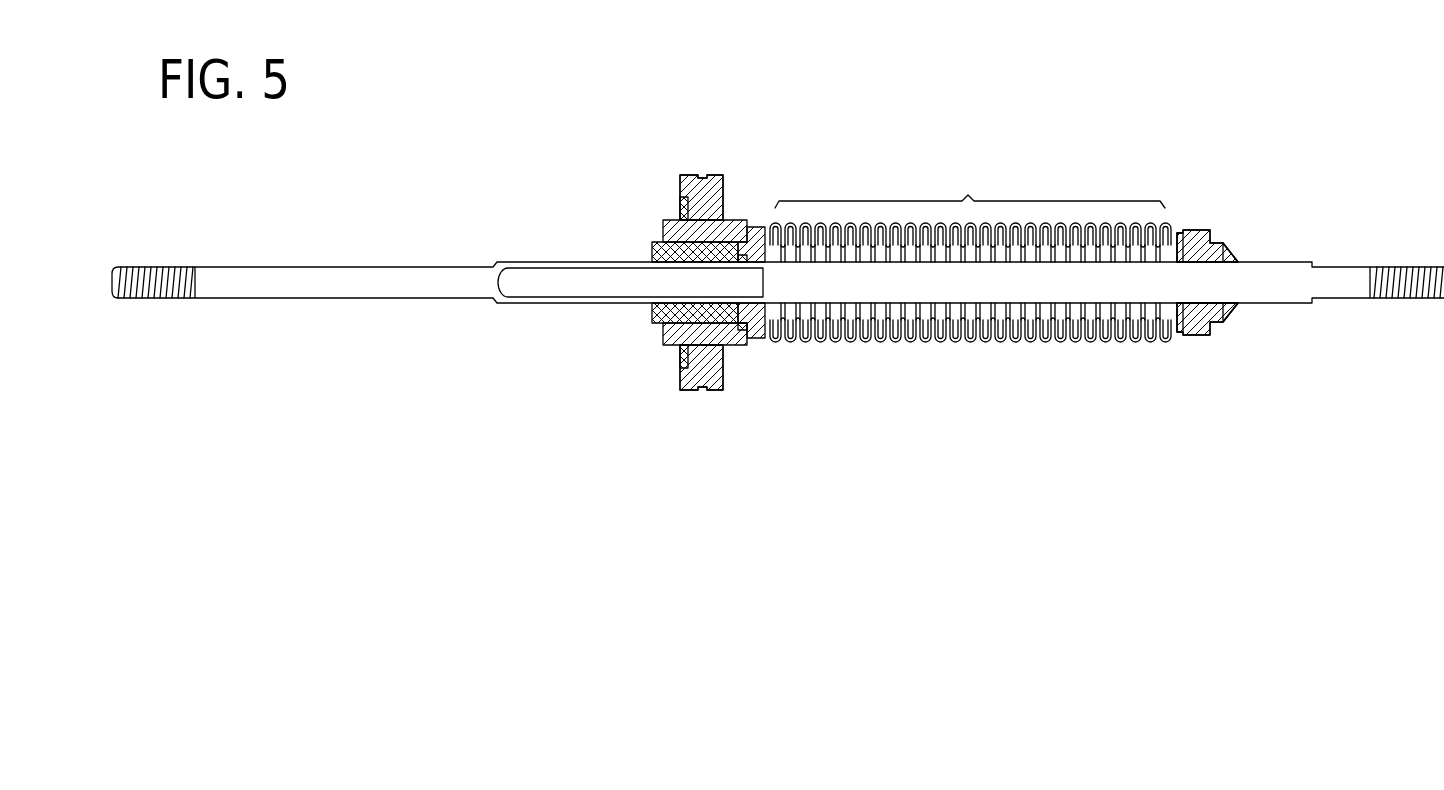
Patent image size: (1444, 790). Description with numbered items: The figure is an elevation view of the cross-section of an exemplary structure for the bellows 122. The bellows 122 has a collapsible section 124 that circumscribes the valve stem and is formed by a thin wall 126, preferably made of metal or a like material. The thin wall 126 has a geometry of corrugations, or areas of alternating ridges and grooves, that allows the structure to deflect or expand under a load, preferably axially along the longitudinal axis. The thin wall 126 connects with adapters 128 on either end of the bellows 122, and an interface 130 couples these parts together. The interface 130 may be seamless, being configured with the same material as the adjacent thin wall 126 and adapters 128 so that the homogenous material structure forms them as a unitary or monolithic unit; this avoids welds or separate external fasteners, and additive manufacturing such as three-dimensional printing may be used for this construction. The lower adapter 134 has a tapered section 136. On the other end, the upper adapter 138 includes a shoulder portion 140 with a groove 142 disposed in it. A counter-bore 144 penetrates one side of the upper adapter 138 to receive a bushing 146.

The bellows 122 is at (1296, 411).
The collapsible section 124 is at (970, 186).
The thin wall 126 is at (1105, 228).
The adapter 128 is at (658, 205).
The interface 130 is at (761, 220).
The lower adapter 134 is at (1192, 332).
The tapered section 136 is at (1228, 313).
The upper adapter 138 is at (735, 330).
The shoulder portion 140 is at (723, 389).
The groove 142 is at (690, 396).
The counter-bore 144 is at (652, 333).
The bushing 146 is at (652, 310).